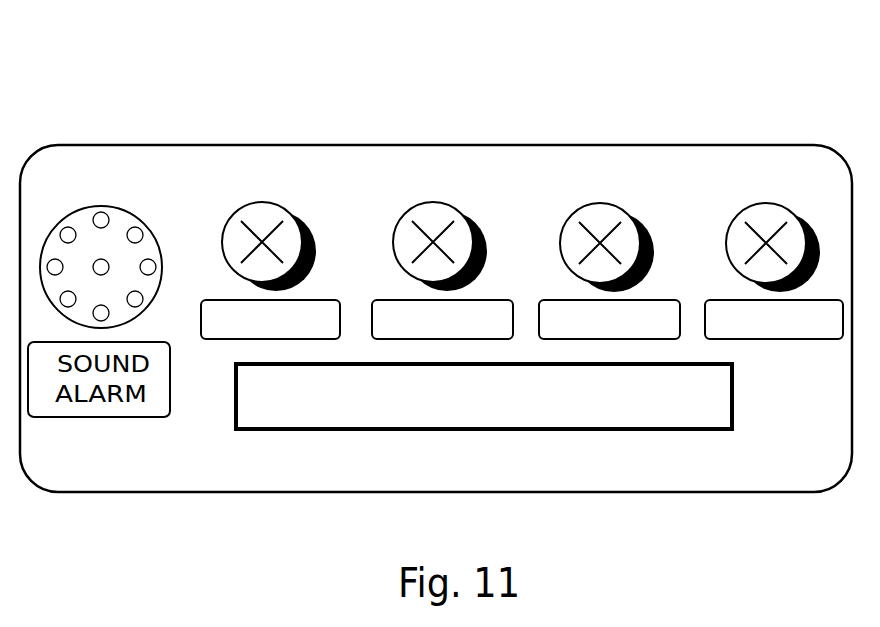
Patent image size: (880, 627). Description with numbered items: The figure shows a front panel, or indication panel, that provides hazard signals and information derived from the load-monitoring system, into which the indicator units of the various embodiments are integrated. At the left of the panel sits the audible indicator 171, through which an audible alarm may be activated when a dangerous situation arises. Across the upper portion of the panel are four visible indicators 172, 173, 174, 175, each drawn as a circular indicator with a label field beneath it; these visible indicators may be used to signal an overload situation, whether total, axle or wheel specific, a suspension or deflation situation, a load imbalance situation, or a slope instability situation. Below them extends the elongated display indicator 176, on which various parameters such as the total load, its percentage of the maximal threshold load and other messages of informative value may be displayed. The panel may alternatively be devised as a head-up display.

The audible indicator 171 is at (135, 220).
The visible indicator 172 is at (283, 228).
The visible indicator 173 is at (456, 227).
The visible indicator 174 is at (620, 224).
The visible indicator 175 is at (788, 228).
The display indicator 176 is at (356, 364).